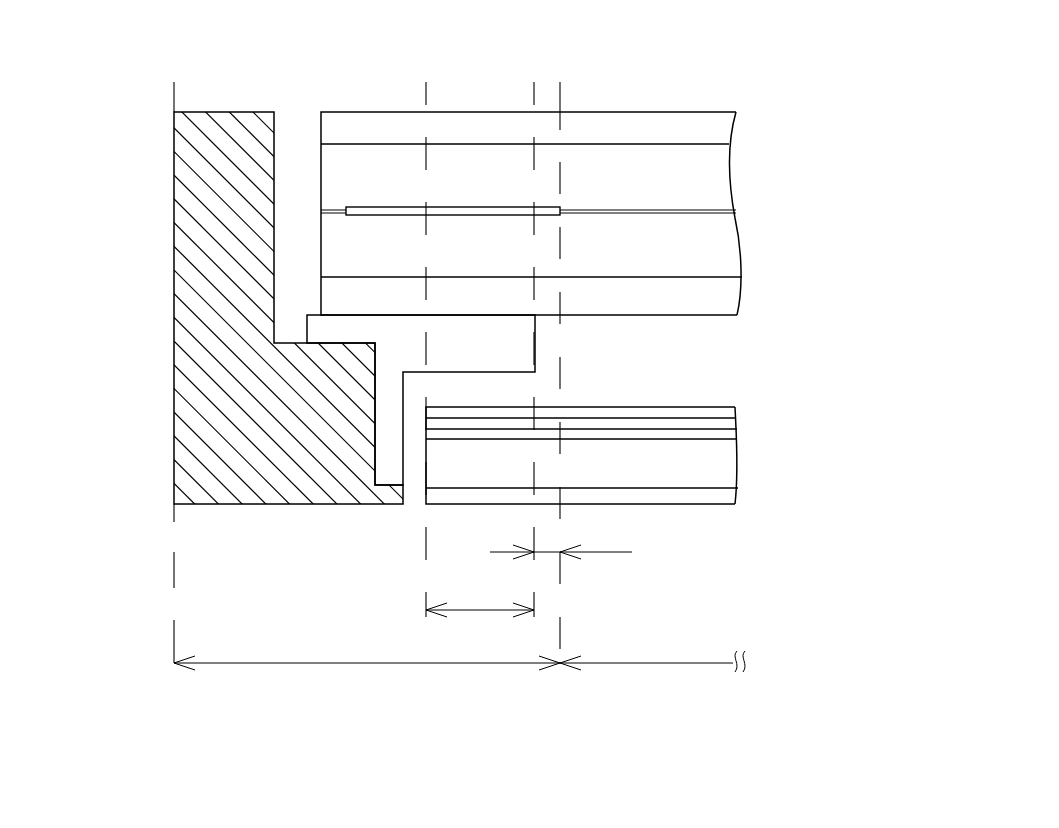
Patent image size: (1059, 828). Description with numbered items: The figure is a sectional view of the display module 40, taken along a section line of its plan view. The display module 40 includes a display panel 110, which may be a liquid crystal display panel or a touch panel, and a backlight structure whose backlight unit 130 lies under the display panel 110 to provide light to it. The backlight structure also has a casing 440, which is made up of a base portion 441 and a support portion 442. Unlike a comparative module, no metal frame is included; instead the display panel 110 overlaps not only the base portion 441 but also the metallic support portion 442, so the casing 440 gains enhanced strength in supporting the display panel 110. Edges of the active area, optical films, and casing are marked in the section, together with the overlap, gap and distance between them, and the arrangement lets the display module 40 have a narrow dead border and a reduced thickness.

The display module 40 is at (872, 40).
The display panel 110 is at (747, 218).
The backlight unit 130 is at (747, 442).
The casing 440 is at (92, 373).
The base portion 441 is at (315, 460).
The support portion 442 is at (388, 400).